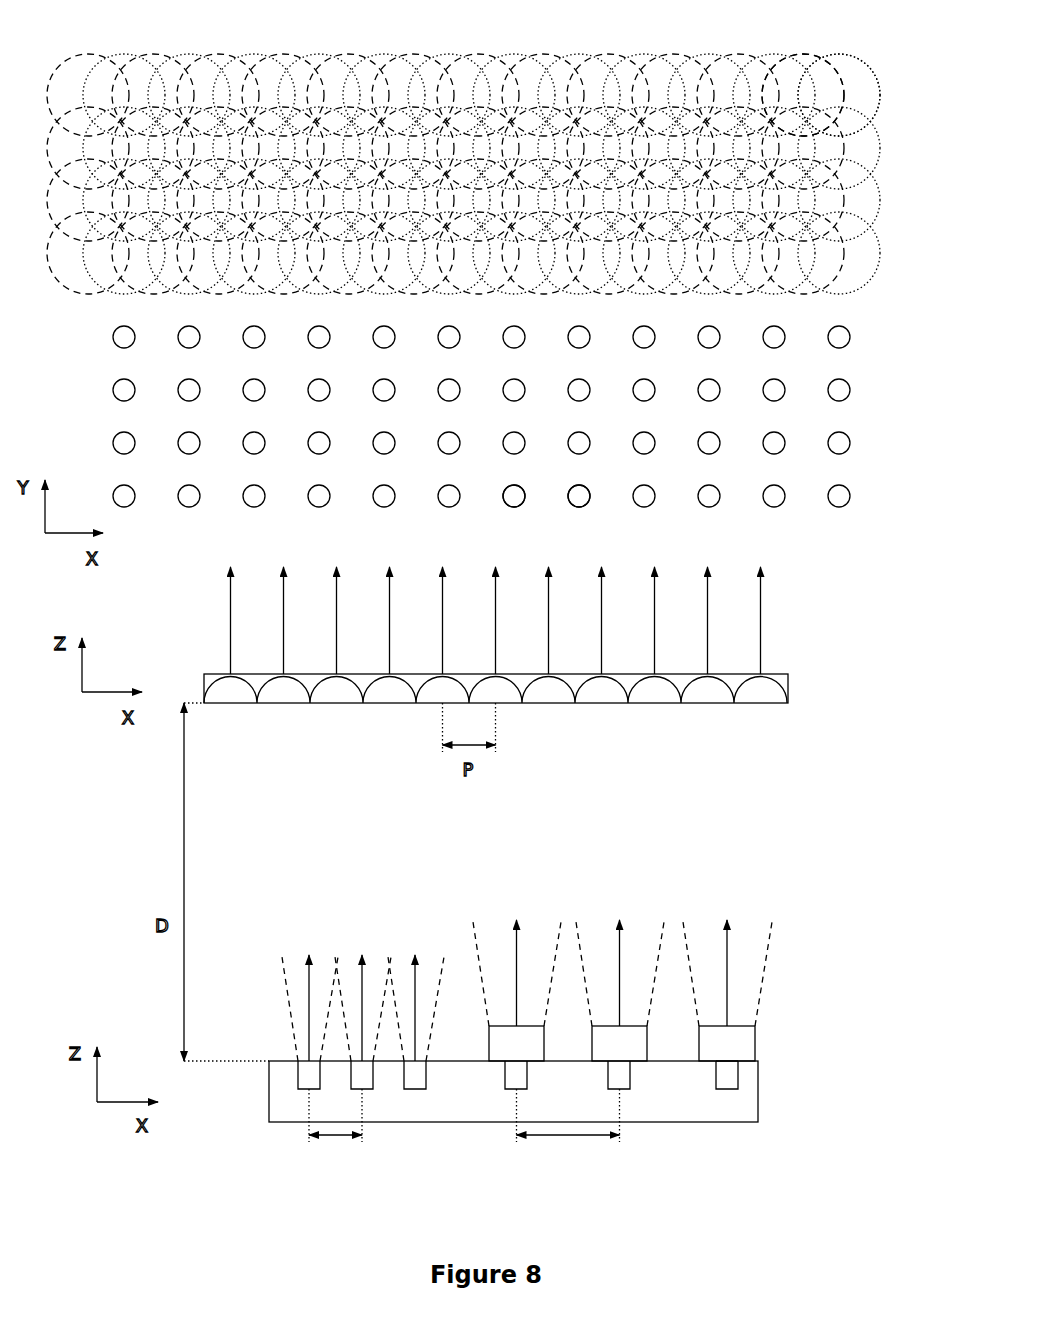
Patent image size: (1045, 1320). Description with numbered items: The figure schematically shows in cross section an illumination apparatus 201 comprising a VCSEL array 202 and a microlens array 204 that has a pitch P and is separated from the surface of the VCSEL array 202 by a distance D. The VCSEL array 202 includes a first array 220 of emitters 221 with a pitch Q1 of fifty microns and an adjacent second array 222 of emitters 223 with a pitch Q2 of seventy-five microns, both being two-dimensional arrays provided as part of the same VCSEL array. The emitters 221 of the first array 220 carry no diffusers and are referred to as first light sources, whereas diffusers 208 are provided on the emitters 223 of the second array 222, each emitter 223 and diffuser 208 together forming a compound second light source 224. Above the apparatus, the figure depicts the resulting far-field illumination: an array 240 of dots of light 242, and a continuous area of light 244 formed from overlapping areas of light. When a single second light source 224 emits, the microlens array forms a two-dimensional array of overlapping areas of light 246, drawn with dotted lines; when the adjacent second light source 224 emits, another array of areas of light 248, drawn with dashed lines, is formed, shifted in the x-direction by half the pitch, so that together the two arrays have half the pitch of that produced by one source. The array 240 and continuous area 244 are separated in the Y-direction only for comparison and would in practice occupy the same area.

The illumination apparatus 201 is at (553, 1079).
The VCSEL array 202 is at (740, 1102).
The microlens array 204 is at (783, 682).
The diffuser 208 is at (497, 1043).
The first array 220 is at (323, 1097).
The emitter 221 is at (323, 1039).
The second array 222 is at (641, 1079).
The emitter 223 is at (730, 1077).
The second light source 224 is at (775, 1072).
The array of dots of light 240 is at (853, 523).
The dot of light 242 is at (519, 504).
The continuous area of light 244 is at (868, 305).
The area of light 246 is at (853, 78).
The area of light 248 is at (808, 58).